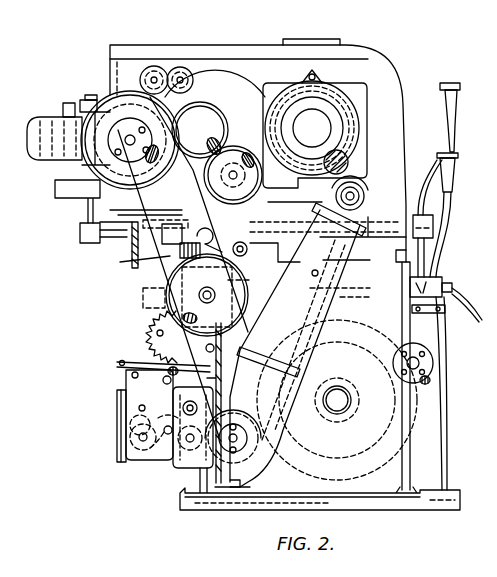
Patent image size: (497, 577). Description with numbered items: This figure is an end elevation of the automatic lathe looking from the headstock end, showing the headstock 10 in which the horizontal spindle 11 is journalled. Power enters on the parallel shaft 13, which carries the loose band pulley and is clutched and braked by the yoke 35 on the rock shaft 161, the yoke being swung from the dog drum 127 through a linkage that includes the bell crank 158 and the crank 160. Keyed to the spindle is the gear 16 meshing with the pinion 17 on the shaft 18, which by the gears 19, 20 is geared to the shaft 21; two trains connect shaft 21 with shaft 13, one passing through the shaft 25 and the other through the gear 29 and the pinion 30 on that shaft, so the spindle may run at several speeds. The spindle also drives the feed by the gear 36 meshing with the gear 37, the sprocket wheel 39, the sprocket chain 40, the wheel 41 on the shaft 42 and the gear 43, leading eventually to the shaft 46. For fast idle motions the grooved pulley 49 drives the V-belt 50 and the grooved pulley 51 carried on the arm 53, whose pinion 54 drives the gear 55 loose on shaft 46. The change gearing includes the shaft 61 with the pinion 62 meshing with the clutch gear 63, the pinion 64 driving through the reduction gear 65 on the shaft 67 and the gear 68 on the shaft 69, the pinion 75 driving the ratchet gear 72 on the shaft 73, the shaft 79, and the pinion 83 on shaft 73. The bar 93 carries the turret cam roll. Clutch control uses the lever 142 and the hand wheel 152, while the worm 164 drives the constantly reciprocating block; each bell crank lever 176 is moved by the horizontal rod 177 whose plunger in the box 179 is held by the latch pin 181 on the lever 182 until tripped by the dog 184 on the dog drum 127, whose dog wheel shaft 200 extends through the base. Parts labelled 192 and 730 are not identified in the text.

The headstock 10 is at (332, 65).
The spindle 11 is at (330, 110).
The shaft 13 is at (212, 90).
The gear 16 is at (233, 163).
The pinion 17 is at (237, 157).
The shaft 18 is at (233, 177).
The gear 19 is at (225, 172).
The gear 20 is at (252, 93).
The shaft 21 is at (258, 57).
The shaft 25 is at (132, 240).
The gear 29 is at (160, 196).
The pinion 30 is at (200, 115).
The yoke 35 is at (92, 100).
The gear 36 is at (340, 148).
The gear 37 is at (349, 163).
The sprocket wheel 39 is at (364, 212).
The sprocket chain 40 is at (298, 345).
The wheel 41 is at (286, 432).
The shaft 42 is at (262, 475).
The gear 43 is at (234, 455).
The shaft 46 is at (157, 334).
The grooved pulley 49 is at (496, 139).
The V-belt 50 is at (143, 257).
The grooved pulley 51 is at (165, 277).
The arm 53 is at (236, 281).
The pinion 54 is at (243, 319).
The gear 55 is at (156, 309).
The shaft 61 is at (190, 405).
The pinion 62 is at (167, 392).
The clutch gear 63 is at (117, 396).
The pinion 64 is at (299, 492).
The reduction gear 65 is at (168, 427).
The shaft 67 is at (150, 425).
The gear 68 is at (117, 456).
The shaft 69 is at (143, 445).
The ratchet gear 72 is at (115, 380).
The shaft 73 is at (120, 363).
The pinion 75 is at (130, 423).
The shaft 79 is at (139, 409).
The pinion 83 is at (117, 363).
The bar 93 is at (155, 78).
The dog drum 127 is at (418, 450).
The lever 142 is at (438, 242).
The hand wheel 152 is at (421, 363).
The bell crank 158 is at (80, 236).
The crank 160 is at (72, 205).
The rock shaft 161 is at (92, 95).
The worm 164 is at (145, 290).
The bell crank lever 176 is at (213, 229).
The horizontal rod 177 is at (352, 324).
The box 179 is at (440, 279).
The latch pin 181 is at (372, 338).
The lever 182 is at (437, 329).
The dog 184 is at (432, 395).
The gear 192 is at (185, 78).
The dog wheel shaft 200 is at (338, 399).
The rod 730 is at (440, 215).